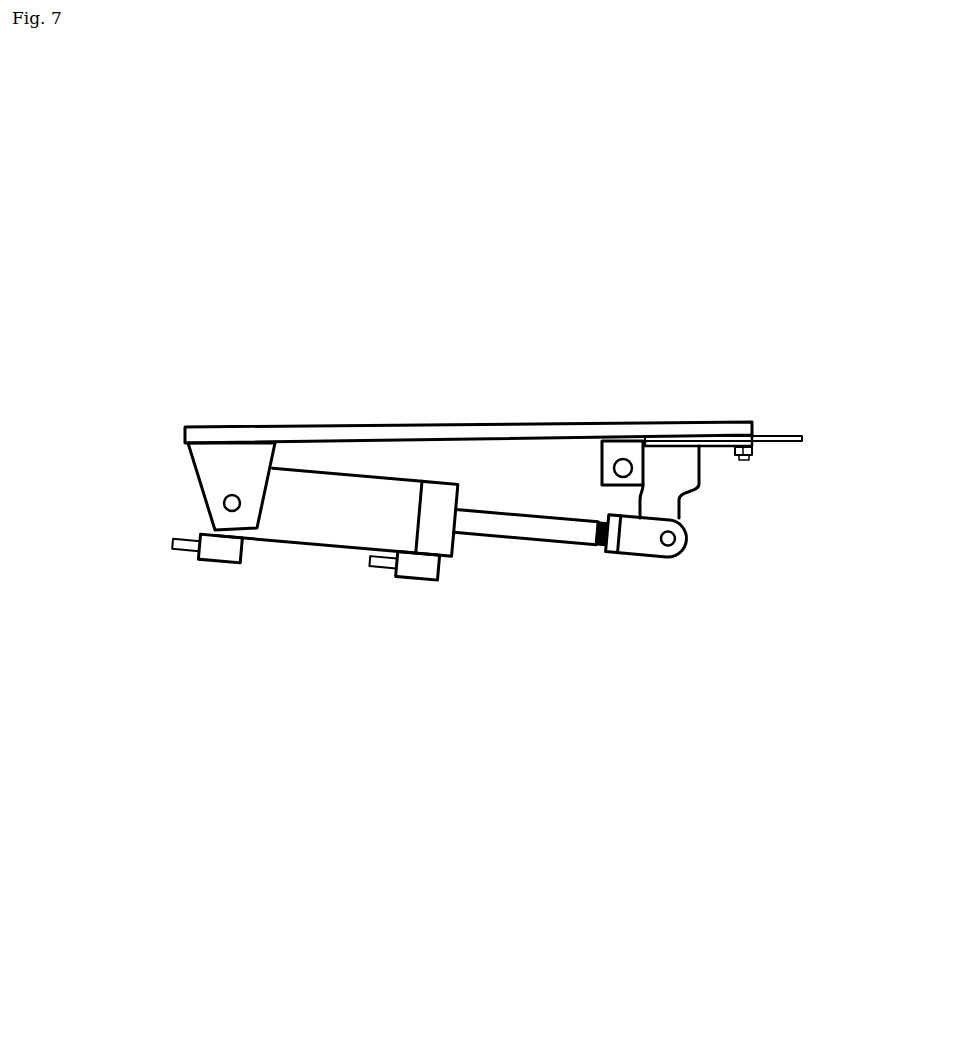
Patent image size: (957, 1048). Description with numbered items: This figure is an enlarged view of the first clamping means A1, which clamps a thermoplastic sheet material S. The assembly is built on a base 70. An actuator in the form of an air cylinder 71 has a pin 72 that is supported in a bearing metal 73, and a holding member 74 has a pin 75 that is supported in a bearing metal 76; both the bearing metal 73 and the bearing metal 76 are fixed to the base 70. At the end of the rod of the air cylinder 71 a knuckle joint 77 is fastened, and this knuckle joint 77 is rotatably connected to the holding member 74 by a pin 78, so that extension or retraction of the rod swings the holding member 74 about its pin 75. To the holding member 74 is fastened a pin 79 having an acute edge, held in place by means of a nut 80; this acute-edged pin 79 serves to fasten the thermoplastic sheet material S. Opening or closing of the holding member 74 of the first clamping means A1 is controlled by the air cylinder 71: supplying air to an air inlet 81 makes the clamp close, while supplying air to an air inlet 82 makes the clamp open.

The base 70 is at (440, 430).
The air cylinder 71 is at (332, 525).
The pin 72 is at (223, 500).
The bearing metal 73 is at (242, 465).
The holding member 74 is at (667, 483).
The pin 75 is at (640, 458).
The bearing metal 76 is at (612, 455).
The knuckle joint 77 is at (635, 540).
The pin 78 is at (665, 545).
The pin with an acute edge 79 is at (744, 462).
The nut 80 is at (753, 453).
The air inlet 81 is at (210, 565).
The air inlet 82 is at (423, 570).
The thermoplastic sheet material S is at (783, 436).
The first clamping means A1 is at (465, 727).